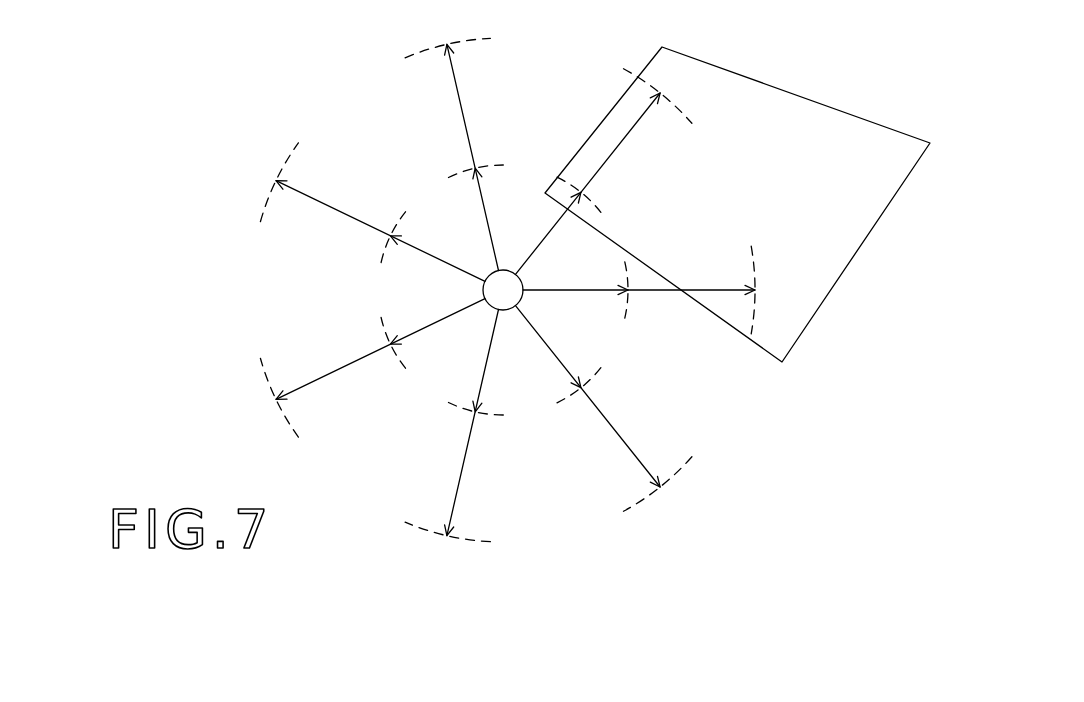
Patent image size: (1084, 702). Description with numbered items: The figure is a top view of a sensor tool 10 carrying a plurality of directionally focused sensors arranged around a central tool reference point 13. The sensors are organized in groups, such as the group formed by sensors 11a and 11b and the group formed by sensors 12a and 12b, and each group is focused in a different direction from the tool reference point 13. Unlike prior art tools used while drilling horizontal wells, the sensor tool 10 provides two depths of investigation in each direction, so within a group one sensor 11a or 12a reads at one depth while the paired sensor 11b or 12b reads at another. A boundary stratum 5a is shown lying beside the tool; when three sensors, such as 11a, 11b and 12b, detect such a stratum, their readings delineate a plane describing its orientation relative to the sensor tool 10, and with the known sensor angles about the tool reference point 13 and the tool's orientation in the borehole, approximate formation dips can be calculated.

The sensor tool 10 is at (390, 285).
The tool reference point 13 is at (518, 305).
The sensor 11a is at (529, 243).
The sensor 11b is at (633, 134).
The sensor 12a is at (582, 297).
The sensor 12b is at (714, 283).
The panel 5a is at (842, 170).